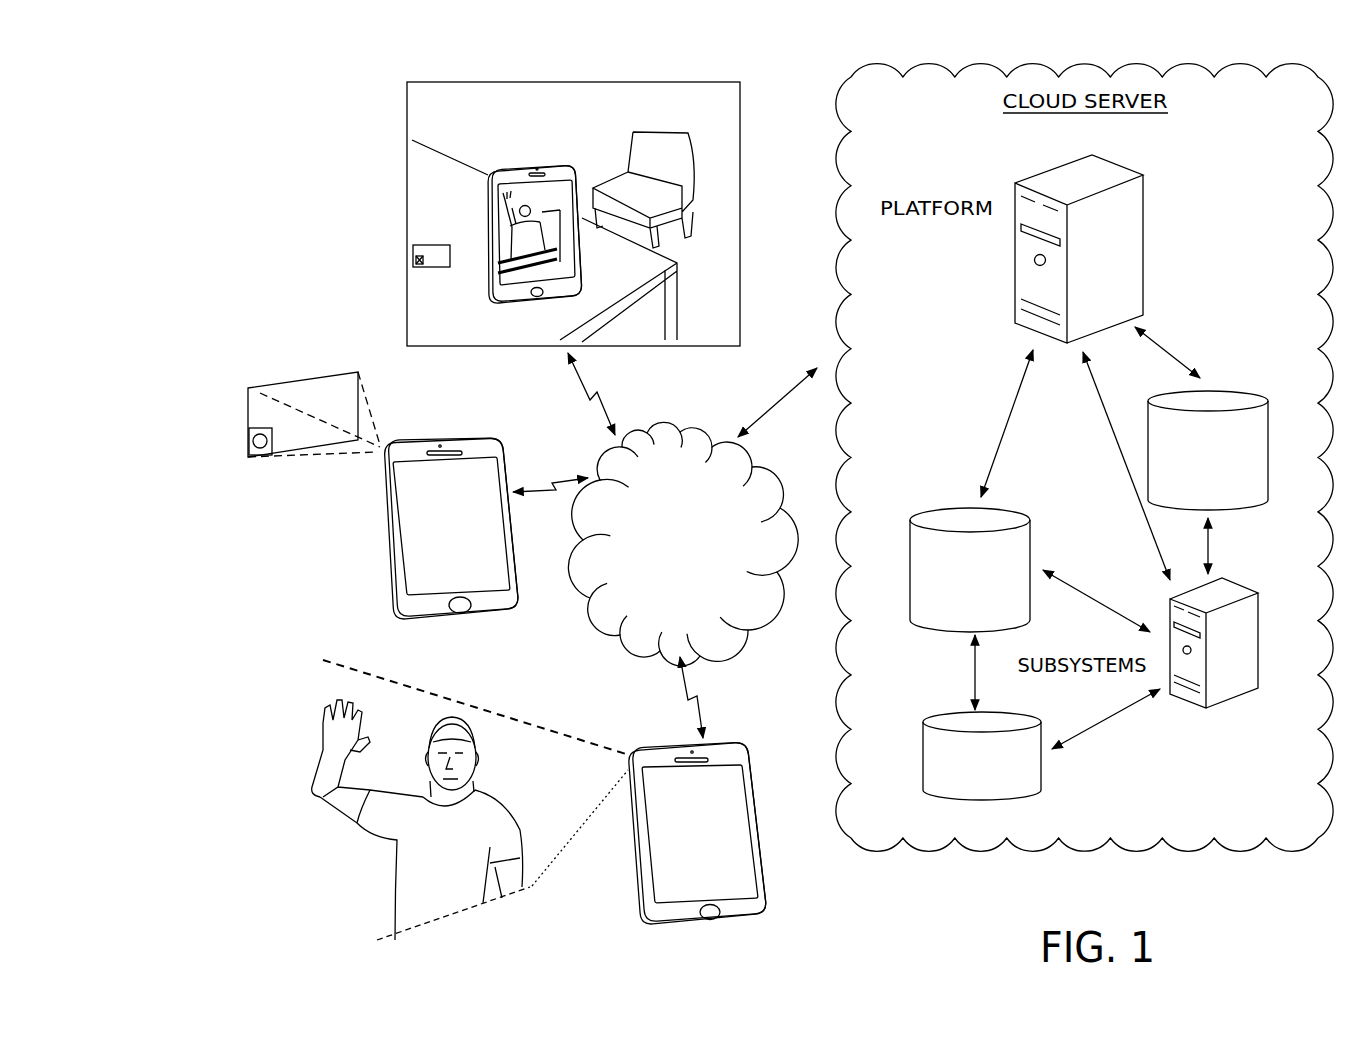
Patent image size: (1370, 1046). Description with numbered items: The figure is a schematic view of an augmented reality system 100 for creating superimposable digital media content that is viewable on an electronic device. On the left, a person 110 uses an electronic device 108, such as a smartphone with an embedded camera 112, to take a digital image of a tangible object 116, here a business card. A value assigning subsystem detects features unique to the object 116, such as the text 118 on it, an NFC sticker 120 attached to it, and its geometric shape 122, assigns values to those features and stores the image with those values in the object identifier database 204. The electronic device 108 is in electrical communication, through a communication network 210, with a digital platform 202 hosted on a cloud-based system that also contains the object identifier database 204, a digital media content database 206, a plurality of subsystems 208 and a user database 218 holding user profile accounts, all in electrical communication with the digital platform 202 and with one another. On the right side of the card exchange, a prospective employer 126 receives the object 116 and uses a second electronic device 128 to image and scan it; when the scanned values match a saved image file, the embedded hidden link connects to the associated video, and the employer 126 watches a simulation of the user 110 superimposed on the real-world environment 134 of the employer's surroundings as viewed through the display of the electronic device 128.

The augmented reality system 100 is at (291, 203).
The electronic device 108 is at (524, 613).
The person 110 is at (300, 746).
The camera 112 is at (396, 428).
The object 116 is at (422, 231).
The text 118 is at (326, 371).
The NFC sticker 120 is at (240, 465).
The geometric shape 122 is at (226, 366).
The prospective employer 126 is at (742, 128).
The electronic device 128 is at (578, 154).
The real-world environment 134 is at (733, 53).
The digital platform 202 is at (1001, 263).
The object identifier database 204 is at (940, 500).
The digital media content database 206 is at (1235, 378).
The subsystems 208 is at (1250, 582).
The communication network 210 is at (665, 410).
The user database 218 is at (945, 712).